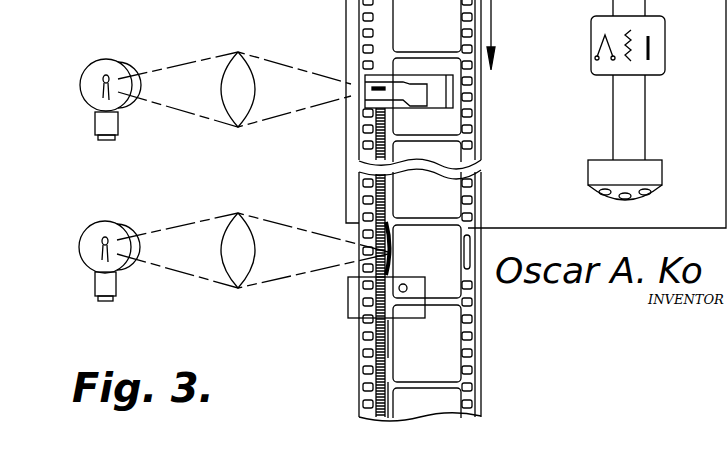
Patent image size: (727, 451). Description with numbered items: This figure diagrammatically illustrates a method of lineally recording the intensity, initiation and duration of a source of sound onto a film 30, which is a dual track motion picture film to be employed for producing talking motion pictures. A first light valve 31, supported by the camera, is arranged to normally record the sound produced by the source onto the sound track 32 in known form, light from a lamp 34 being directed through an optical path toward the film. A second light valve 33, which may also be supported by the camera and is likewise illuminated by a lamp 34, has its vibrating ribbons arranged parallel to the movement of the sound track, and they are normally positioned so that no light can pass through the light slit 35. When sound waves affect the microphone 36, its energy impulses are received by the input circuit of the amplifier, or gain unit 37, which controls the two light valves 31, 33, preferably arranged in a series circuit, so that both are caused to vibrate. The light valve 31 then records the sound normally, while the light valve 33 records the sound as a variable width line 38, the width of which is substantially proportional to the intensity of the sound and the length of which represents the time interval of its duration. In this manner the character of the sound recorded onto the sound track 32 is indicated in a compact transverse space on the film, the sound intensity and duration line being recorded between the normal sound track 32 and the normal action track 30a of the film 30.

The film 30 is at (481, 107).
The normal action track 30a is at (445, 195).
The light valve 31 is at (365, 78).
The sound track 32 is at (252, 170).
The light valve 33 is at (360, 268).
The lamp 34 is at (82, 70).
The light slit 35 is at (395, 253).
The microphone 36 is at (648, 176).
The amplifier or gain unit 37 is at (667, 43).
The variable width line 38 is at (377, 349).